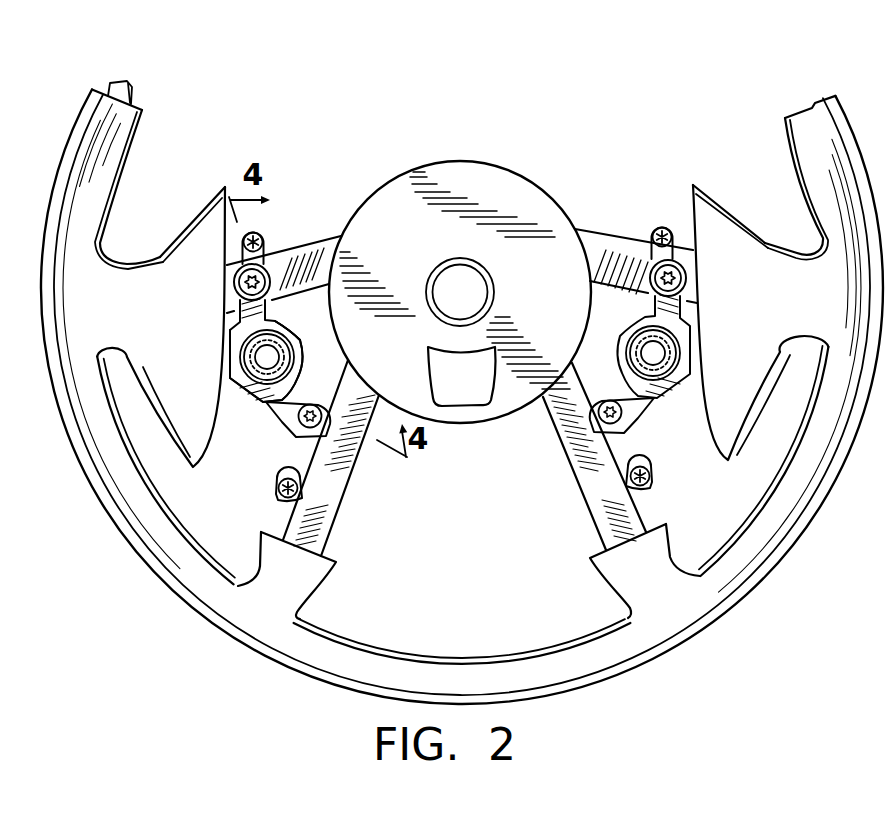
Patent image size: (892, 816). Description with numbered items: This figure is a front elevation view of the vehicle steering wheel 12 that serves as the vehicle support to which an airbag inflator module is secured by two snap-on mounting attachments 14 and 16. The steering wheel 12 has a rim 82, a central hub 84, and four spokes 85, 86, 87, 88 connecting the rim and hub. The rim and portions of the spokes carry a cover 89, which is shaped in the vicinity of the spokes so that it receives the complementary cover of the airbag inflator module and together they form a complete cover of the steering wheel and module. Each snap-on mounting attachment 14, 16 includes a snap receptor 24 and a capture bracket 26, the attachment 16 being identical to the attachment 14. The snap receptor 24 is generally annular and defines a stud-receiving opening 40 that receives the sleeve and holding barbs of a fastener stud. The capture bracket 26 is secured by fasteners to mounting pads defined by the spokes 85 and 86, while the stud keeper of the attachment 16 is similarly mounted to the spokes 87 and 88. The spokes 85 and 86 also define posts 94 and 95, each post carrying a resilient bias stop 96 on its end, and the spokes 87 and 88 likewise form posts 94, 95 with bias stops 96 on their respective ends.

The steering wheel 12 is at (130, 560).
The snap-on mounting attachment 14 is at (255, 412).
The snap-on mounting attachment 16 is at (661, 410).
The snap receptor 24 is at (243, 358).
The capture bracket 26 is at (233, 356).
The stud-receiving opening 40 is at (287, 345).
The rim 82 is at (117, 81).
The hub 84 is at (470, 160).
The spoke 85 is at (328, 237).
The spoke 86 is at (326, 518).
The spoke 87 is at (607, 526).
The spoke 88 is at (607, 247).
The cover 89 is at (181, 228).
The post 94 is at (266, 240).
The post 95 is at (276, 488).
The resilient bias stop 96 is at (262, 233).